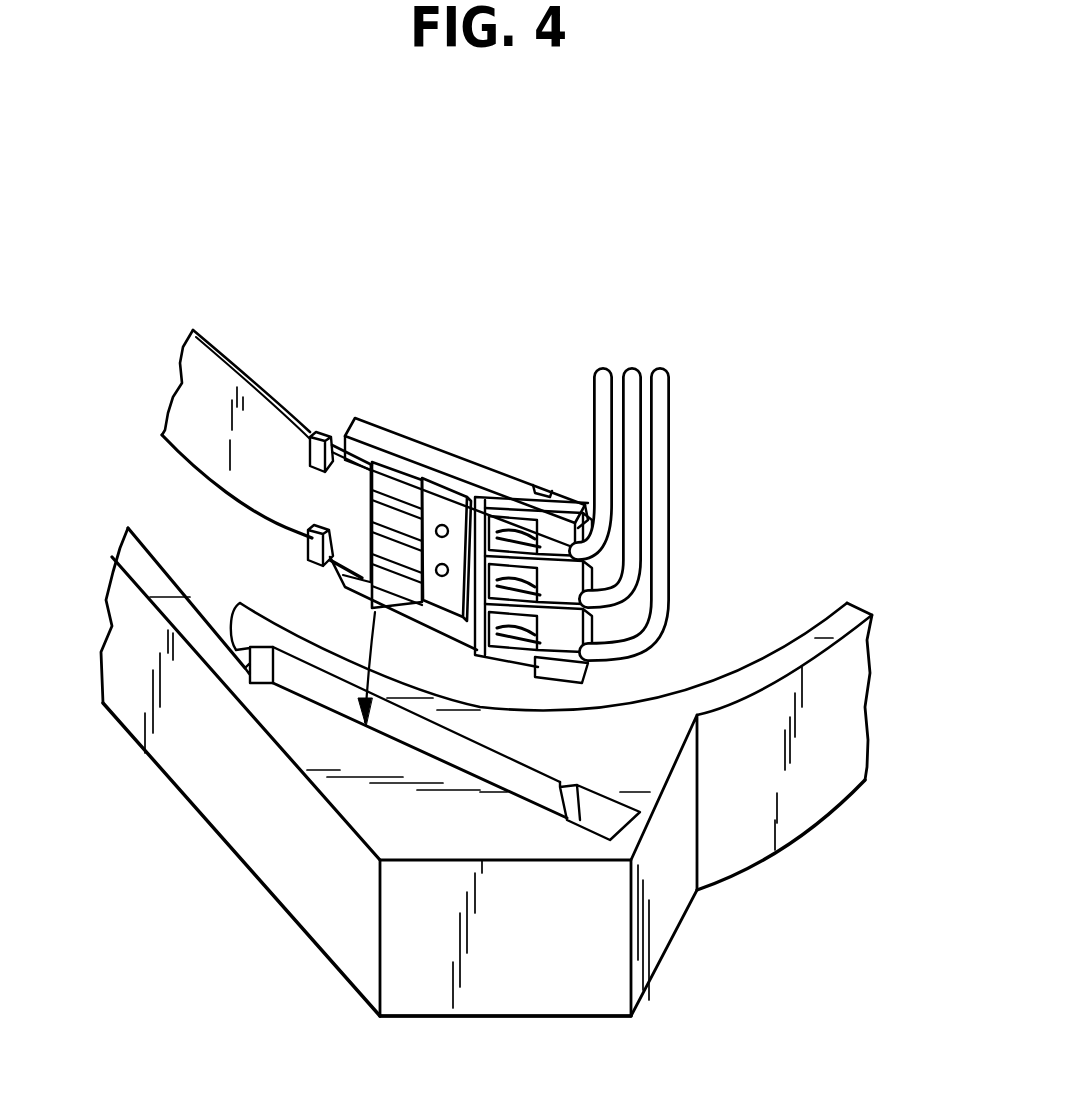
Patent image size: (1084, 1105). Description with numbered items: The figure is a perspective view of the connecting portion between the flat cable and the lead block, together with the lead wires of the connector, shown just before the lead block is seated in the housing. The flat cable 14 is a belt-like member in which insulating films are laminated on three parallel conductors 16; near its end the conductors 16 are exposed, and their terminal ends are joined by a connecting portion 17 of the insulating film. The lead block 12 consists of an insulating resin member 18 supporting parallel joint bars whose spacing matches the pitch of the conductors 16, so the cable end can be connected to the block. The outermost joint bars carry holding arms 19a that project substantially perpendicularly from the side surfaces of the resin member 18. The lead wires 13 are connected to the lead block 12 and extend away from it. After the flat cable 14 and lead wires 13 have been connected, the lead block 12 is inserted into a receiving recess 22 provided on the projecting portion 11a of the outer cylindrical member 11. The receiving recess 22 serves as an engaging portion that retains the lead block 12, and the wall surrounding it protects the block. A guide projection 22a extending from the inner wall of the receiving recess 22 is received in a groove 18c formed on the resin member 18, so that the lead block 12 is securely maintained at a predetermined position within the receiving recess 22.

The outer cylindrical member 11 is at (833, 798).
The projecting portion 11a is at (657, 923).
The lead block 12 is at (450, 442).
The lead wire 13 is at (667, 417).
The flat cable 14 is at (188, 437).
The conductor 16 is at (398, 568).
The connecting portion 17 is at (443, 605).
The insulating resin member 18 is at (393, 440).
The groove 18c is at (543, 485).
The holding arm 19a is at (320, 433).
The receiving recess 22 is at (317, 682).
The guide projection 22a is at (578, 807).